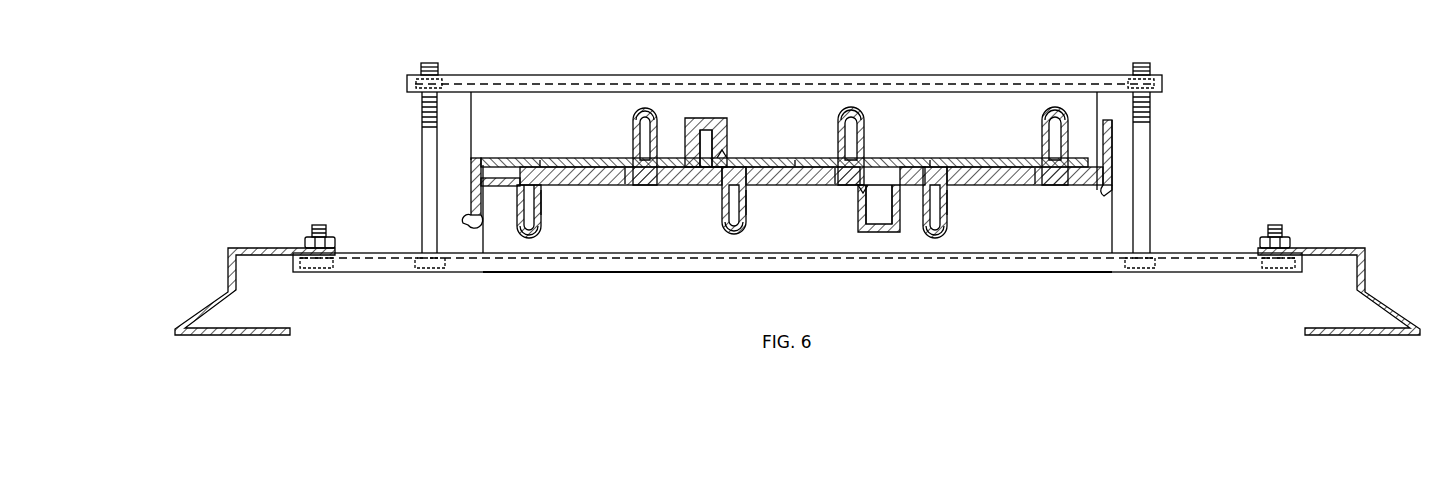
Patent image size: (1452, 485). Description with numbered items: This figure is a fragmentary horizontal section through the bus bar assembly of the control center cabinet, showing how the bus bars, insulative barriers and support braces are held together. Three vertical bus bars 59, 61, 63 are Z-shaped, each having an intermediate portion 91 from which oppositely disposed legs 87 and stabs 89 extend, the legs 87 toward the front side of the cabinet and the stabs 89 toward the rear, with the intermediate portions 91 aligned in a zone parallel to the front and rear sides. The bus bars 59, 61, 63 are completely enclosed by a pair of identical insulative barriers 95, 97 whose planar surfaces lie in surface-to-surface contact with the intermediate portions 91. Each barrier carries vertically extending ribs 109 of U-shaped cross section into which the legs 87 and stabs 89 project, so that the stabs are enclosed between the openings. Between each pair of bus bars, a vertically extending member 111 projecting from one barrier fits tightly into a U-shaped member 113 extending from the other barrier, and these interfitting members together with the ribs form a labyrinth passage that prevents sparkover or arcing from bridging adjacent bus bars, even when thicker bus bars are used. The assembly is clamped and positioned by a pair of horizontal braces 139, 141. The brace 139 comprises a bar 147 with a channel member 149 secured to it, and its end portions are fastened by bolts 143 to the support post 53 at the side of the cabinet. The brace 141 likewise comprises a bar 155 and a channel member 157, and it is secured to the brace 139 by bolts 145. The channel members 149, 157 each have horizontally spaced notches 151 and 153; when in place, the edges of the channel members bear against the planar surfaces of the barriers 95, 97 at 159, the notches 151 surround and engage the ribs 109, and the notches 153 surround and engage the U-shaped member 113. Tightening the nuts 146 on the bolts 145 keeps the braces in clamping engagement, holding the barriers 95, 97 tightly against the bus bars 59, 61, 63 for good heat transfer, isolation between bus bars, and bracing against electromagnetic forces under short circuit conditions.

The support post 53 is at (228, 252).
The bus bar 59 is at (585, 185).
The bus bar 61 is at (815, 185).
The bus bar 63 is at (997, 185).
The leg 87 is at (535, 200).
The stab 89 is at (633, 150).
The intermediate portion 91 is at (570, 162).
The barrier 95 is at (471, 160).
The barrier 97 is at (468, 215).
The rib 109 is at (662, 150).
The vertically extending member 111 is at (715, 132).
The U-shaped member 113 is at (705, 118).
The horizontal brace 139 is at (505, 273).
The horizontal brace 141 is at (563, 74).
The bolt 143 is at (305, 242).
The bolt 145 is at (421, 155).
The nut 146 is at (413, 74).
The bar 147 is at (352, 273).
The channel member 149 is at (1076, 231).
The notch 151 is at (652, 122).
The notch 153 is at (722, 160).
The bar 155 is at (466, 83).
The channel member 157 is at (511, 131).
The engagement location 159 is at (540, 160).